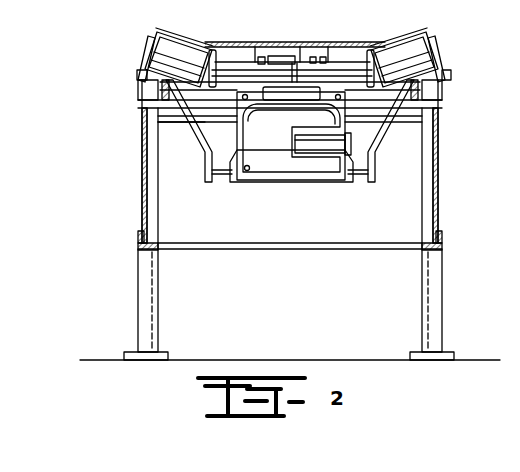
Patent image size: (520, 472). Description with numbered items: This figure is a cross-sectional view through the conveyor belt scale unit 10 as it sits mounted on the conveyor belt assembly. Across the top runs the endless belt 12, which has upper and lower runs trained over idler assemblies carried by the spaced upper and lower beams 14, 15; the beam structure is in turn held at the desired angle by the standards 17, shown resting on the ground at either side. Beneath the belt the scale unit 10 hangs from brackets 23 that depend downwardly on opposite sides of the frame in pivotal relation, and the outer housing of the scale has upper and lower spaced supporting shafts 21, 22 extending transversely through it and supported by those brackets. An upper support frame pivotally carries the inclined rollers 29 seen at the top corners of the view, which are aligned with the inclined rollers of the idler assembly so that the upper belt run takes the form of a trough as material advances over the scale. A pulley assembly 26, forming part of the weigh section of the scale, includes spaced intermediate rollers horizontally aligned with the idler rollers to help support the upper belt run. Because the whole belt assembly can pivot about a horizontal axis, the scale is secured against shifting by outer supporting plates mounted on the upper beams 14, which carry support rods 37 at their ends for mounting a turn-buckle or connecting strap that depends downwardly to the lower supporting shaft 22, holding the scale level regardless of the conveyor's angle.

The conveyor belt scale unit 10 is at (290, 186).
The endless belt 12 is at (222, 43).
The upper beam 14 is at (138, 112).
The lower beam 15 is at (138, 236).
The standard 17 is at (140, 296).
The upper supporting shaft 21 is at (181, 118).
The lower supporting shaft 22 is at (201, 180).
The bracket 23 is at (195, 137).
The pulley assembly 26 is at (276, 44).
The inclined roller 29 is at (160, 42).
The support rod 37 is at (451, 75).